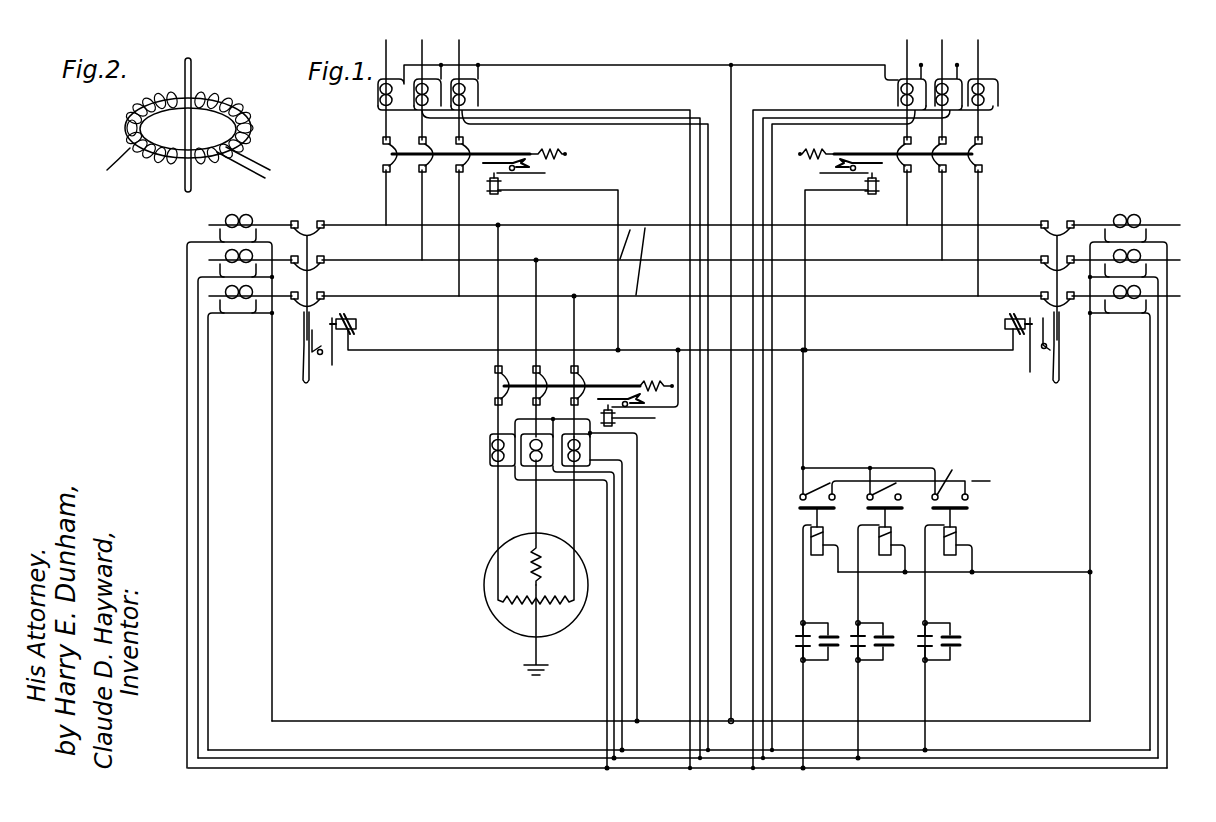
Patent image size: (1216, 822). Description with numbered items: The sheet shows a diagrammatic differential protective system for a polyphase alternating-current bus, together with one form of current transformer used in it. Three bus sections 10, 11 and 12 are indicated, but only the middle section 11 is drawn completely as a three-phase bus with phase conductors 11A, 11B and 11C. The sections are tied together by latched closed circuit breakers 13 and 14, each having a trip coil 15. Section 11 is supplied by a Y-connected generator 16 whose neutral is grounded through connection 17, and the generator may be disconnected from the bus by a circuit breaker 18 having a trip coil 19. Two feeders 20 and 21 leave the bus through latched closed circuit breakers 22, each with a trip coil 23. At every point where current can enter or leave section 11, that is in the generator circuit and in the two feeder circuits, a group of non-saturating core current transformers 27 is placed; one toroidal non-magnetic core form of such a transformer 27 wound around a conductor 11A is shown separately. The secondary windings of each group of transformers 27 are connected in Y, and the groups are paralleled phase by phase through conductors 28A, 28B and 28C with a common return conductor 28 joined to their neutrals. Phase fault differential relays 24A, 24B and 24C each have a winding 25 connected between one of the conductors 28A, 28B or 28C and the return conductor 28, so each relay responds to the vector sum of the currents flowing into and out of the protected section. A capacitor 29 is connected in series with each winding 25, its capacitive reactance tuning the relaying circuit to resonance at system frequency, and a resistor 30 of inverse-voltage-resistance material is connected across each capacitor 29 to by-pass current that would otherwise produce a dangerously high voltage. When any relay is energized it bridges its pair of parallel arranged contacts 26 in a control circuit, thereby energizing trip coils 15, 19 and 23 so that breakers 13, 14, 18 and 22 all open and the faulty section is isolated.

In FIG. 1, the bus section 10 is at (222, 264).
In FIG. 1, the bus section 11 is at (630, 230).
In FIG. 2, the phase conductor 11A is at (193, 72).
In FIG. 1, the phase conductor 11A is at (678, 230).
In FIG. 1, the phase conductor 11B is at (670, 259).
In FIG. 1, the phase conductor 11C is at (664, 295).
In FIG. 1, the bus section 12 is at (1180, 225).
In FIG. 1, the bus-tie circuit breaker 13 is at (312, 213).
In FIG. 1, the bus-tie circuit breaker 14 is at (1057, 213).
In FIG. 1, the trip coil 15 is at (356, 318).
In FIG. 1, the Y-connected generator 16 is at (484, 584).
In FIG. 1, the grounded neutral connection 17 is at (534, 658).
In FIG. 1, the source circuit breaker 18 is at (496, 386).
In FIG. 1, the trip coil 19 is at (612, 380).
In FIG. 1, the feeder 20 is at (386, 54).
In FIG. 1, the feeder 21 is at (907, 54).
In FIG. 1, the feeder circuit breaker 22 is at (384, 154).
In FIG. 1, the trip coil 23 is at (488, 195).
In FIG. 1, the phase fault differential relay 24A is at (820, 555).
In FIG. 1, the phase fault differential relay 24B is at (881, 555).
In FIG. 1, the phase fault differential relay 24C is at (946, 555).
In FIG. 1, the winding 25 is at (879, 536).
In FIG. 1, the contacts 26 is at (842, 488).
In FIG. 2, the current transformer 27 is at (238, 89).
In FIG. 1, the current transformer 27 is at (236, 232).
In FIG. 1, the common return conductor 28 is at (374, 721).
In FIG. 1, the conductor 28A is at (410, 768).
In FIG. 1, the conductor 28B is at (466, 758).
In FIG. 1, the conductor 28C is at (504, 750).
In FIG. 1, the capacitor 29 is at (800, 644).
In FIG. 1, the resistor 30 is at (836, 640).